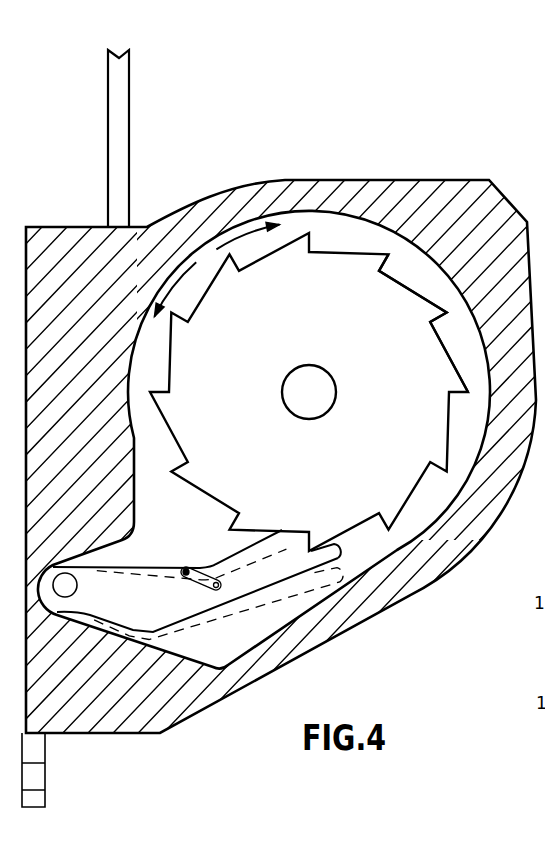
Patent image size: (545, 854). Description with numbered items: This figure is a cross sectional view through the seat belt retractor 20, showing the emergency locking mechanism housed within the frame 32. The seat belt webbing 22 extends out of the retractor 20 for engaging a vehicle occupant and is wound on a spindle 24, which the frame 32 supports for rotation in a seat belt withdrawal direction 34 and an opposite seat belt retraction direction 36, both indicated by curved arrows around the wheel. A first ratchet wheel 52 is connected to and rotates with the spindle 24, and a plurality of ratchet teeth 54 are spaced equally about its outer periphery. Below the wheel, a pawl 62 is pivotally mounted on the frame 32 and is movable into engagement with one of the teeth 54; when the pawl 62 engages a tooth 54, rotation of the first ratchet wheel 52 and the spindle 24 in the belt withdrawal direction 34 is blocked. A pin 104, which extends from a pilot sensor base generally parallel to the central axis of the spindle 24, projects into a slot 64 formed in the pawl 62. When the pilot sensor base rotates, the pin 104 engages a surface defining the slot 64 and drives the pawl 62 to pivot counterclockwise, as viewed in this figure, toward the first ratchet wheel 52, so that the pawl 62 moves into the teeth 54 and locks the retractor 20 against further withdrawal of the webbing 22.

The seat belt retractor 20 is at (250, 130).
The seat belt webbing 22 is at (118, 80).
The spindle 24 is at (309, 402).
The frame 32 is at (364, 592).
The seat belt withdrawal direction 34 is at (243, 232).
The seat belt retraction direction 36 is at (182, 290).
The first ratchet wheel 52 is at (338, 317).
The ratchet teeth 54 is at (372, 263).
The pawl 62 is at (247, 560).
The slot 64 is at (212, 586).
The pin 104 is at (186, 570).